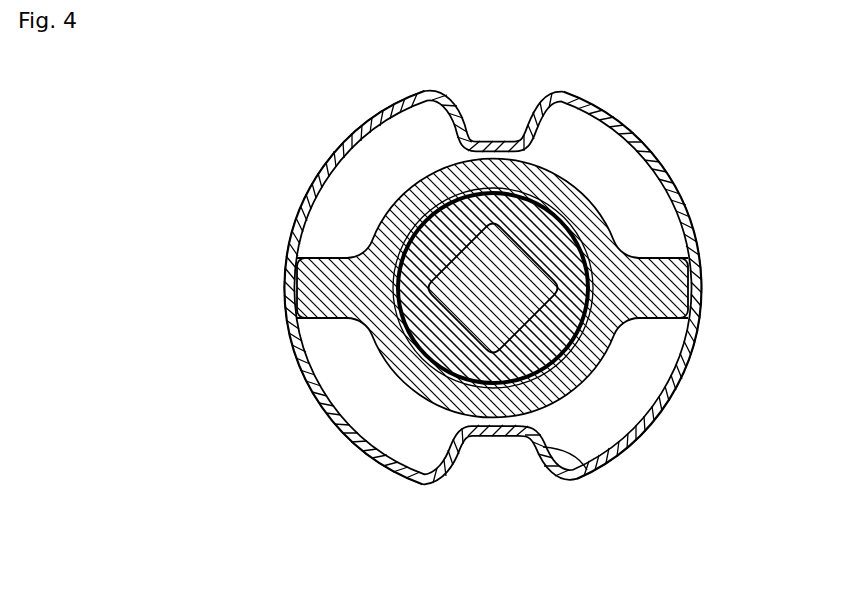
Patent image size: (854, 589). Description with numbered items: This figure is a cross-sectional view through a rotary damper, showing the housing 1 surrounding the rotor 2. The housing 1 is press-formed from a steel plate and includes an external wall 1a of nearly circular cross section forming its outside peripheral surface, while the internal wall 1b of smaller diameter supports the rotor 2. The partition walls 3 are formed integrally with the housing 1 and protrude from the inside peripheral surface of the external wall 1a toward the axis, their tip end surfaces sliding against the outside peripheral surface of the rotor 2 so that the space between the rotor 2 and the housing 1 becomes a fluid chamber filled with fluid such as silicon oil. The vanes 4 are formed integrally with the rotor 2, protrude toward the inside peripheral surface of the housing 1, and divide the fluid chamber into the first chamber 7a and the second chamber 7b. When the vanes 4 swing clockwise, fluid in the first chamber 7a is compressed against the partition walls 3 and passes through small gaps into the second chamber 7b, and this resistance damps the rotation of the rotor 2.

The housing 1 is at (312, 200).
The external wall 1a is at (643, 140).
The internal wall 1b is at (547, 210).
The rotor 2 is at (372, 226).
The partition walls 3 is at (443, 133).
The vanes 4 is at (657, 257).
The first chamber 7a is at (367, 160).
The second chamber 7b is at (647, 198).